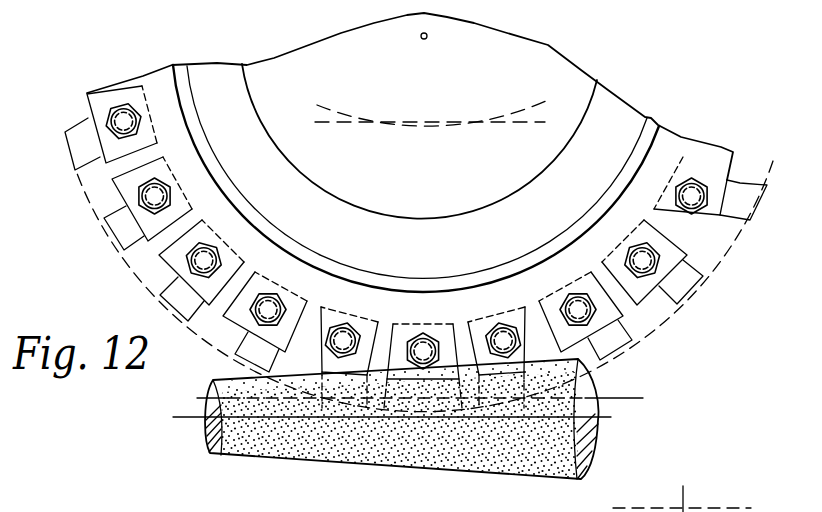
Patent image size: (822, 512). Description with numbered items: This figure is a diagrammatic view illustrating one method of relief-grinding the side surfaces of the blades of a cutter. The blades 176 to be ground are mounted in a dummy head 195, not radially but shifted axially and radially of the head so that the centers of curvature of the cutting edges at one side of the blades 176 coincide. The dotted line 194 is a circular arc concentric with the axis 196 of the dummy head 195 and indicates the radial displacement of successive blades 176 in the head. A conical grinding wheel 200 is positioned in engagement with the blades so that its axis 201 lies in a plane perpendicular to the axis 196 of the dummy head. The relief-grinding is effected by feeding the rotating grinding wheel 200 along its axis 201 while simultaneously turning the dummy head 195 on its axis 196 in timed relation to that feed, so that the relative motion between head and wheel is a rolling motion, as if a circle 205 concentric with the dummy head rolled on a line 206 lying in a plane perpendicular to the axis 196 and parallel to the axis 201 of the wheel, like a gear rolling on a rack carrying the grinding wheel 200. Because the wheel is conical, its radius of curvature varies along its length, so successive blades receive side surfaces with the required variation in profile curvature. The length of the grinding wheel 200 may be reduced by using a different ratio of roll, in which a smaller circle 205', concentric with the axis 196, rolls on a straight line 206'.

The dummy head 195 is at (571, 78).
The axis of the dummy head 196 is at (427, 38).
The smaller circle 205' is at (432, 98).
The straight line 206' is at (430, 146).
The dotted line 194 is at (658, 329).
The circle 205 is at (407, 247).
The blades 176 is at (691, 286).
The conical grinding wheel 200 is at (479, 453).
The line 206 is at (436, 382).
The axis of the grinding wheel 201 is at (324, 417).